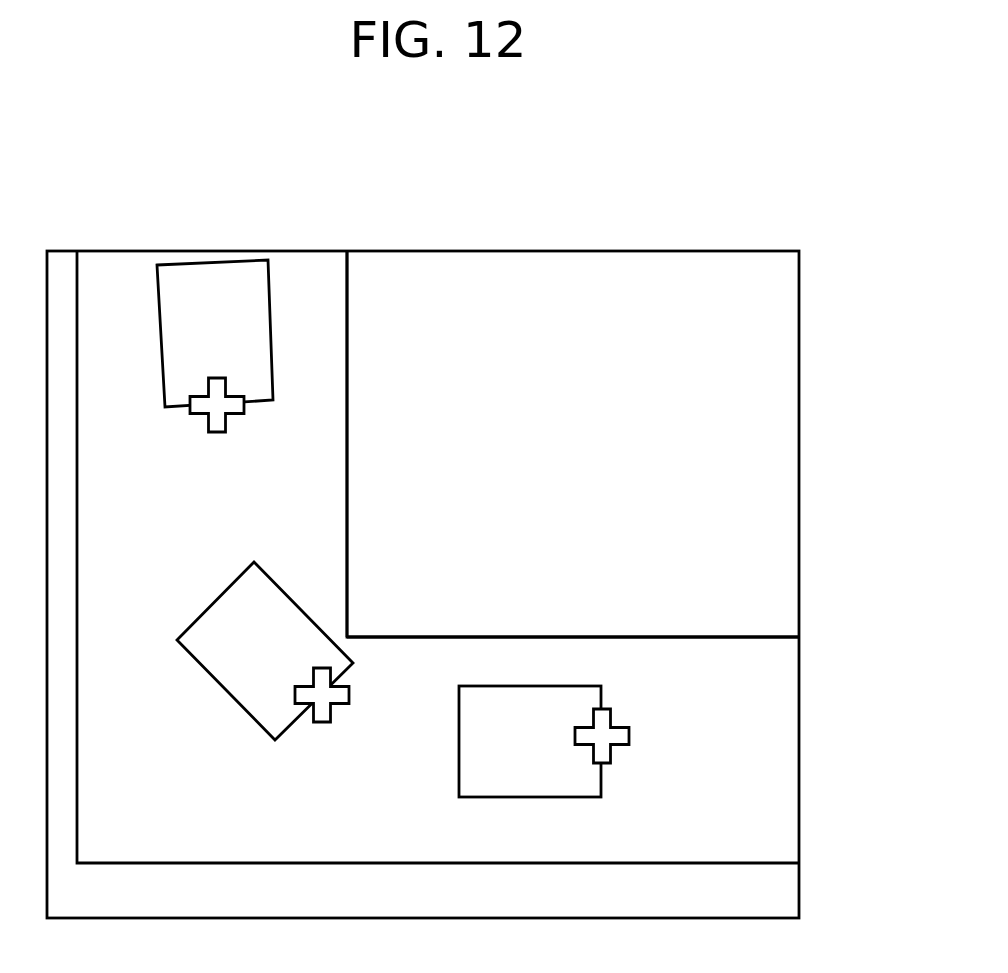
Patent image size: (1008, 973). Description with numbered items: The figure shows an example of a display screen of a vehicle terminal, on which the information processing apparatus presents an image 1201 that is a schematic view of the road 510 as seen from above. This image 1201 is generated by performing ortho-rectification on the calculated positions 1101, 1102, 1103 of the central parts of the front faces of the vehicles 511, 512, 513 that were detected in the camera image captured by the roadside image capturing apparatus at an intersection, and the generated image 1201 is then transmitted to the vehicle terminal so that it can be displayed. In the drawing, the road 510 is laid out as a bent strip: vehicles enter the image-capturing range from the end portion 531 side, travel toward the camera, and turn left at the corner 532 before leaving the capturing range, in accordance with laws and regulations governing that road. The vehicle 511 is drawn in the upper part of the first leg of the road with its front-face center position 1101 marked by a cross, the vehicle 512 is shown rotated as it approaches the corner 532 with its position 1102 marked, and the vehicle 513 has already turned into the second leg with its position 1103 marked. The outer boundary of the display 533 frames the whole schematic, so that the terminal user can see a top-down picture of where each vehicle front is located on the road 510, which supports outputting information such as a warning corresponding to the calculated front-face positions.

The road 510 is at (349, 396).
The vehicle 511 is at (273, 357).
The vehicle 512 is at (271, 576).
The vehicle 513 is at (548, 797).
The end portion 531 is at (140, 251).
The corner 532 is at (349, 630).
The display screen outer frame 533 is at (803, 729).
The position of the central part of the front face of the vehicle 1101 is at (232, 424).
The position of the central part of the front face of the vehicle 1102 is at (350, 689).
The position of the central part of the front face of the vehicle 1103 is at (630, 732).
The image 1201 is at (452, 249).